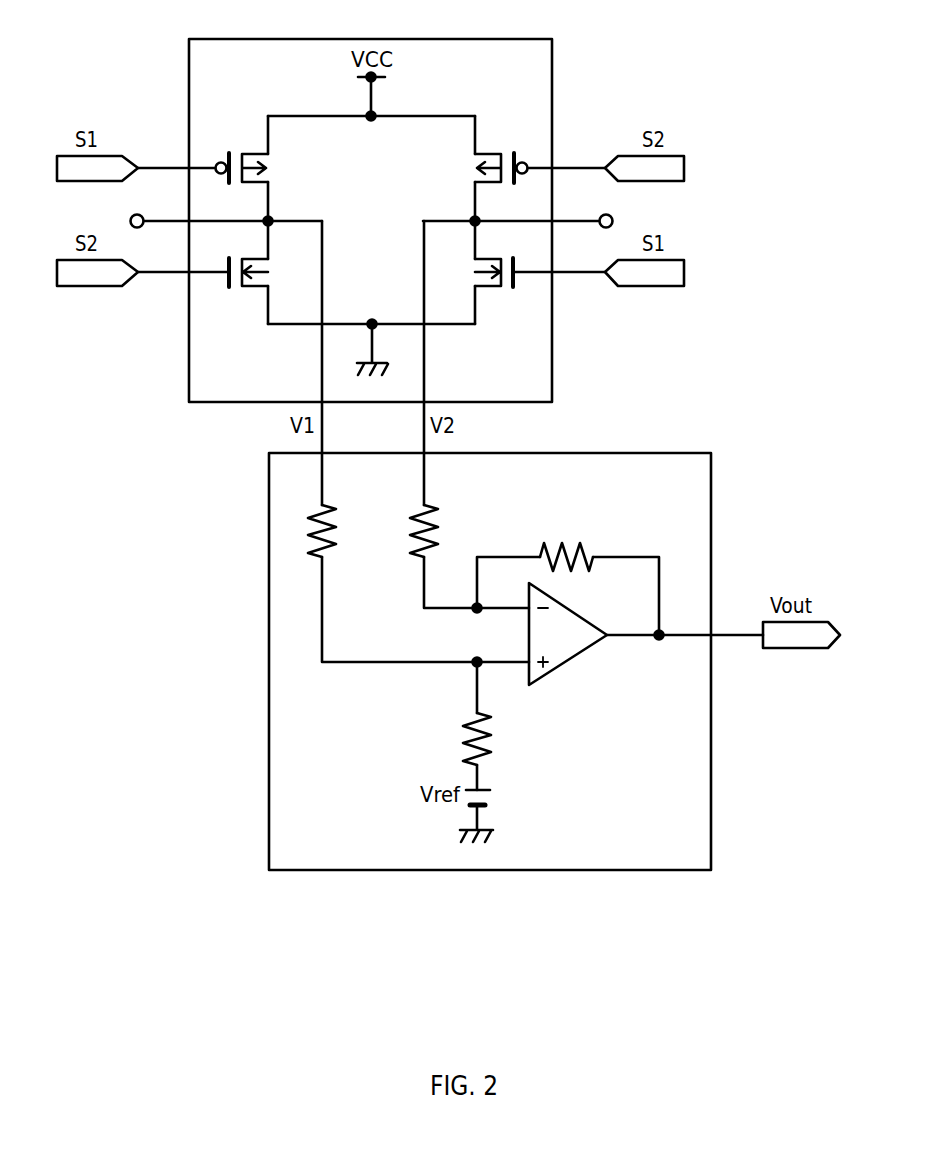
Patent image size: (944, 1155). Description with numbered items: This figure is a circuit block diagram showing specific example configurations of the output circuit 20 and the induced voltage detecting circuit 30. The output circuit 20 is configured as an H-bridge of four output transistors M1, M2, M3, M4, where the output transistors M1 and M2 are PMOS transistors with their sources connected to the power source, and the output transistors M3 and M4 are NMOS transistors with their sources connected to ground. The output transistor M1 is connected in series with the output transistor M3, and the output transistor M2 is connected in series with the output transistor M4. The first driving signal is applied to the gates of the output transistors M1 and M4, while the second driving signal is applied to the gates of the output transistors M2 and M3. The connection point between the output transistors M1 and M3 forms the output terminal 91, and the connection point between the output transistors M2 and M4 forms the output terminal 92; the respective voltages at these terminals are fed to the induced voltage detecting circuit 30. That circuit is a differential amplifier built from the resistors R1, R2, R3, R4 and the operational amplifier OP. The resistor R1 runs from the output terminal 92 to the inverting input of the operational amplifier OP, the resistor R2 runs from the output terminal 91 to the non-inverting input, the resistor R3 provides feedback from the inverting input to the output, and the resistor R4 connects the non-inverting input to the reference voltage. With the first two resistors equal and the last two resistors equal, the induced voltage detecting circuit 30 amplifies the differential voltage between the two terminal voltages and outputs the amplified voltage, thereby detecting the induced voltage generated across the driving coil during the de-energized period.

The output circuit 20 is at (552, 58).
The induced voltage detecting circuit 30 is at (711, 470).
The output terminal 91 is at (131, 215).
The output terminal 92 is at (612, 215).
The output transistor M1 is at (246, 155).
The output transistor M2 is at (497, 155).
The output transistor M3 is at (246, 288).
The output transistor M4 is at (497, 288).
The resistor R1 is at (441, 540).
The resistor R2 is at (339, 540).
The resistor R3 is at (585, 543).
The resistor R4 is at (494, 748).
The operational amplifier OP is at (531, 687).